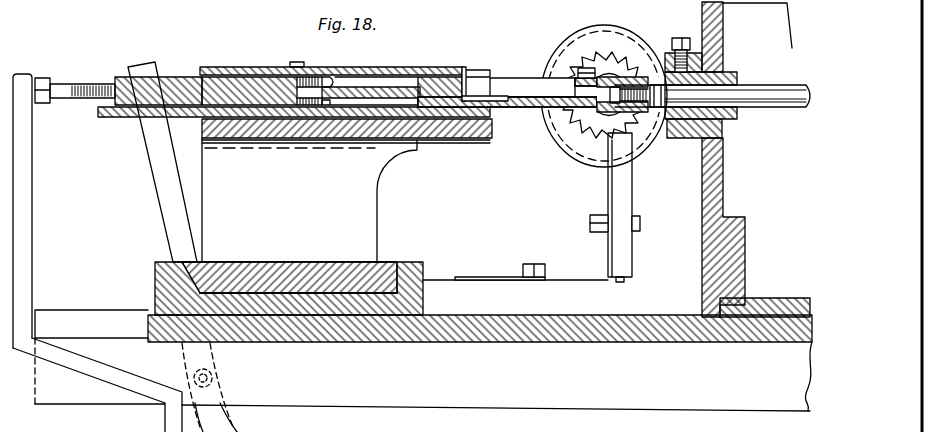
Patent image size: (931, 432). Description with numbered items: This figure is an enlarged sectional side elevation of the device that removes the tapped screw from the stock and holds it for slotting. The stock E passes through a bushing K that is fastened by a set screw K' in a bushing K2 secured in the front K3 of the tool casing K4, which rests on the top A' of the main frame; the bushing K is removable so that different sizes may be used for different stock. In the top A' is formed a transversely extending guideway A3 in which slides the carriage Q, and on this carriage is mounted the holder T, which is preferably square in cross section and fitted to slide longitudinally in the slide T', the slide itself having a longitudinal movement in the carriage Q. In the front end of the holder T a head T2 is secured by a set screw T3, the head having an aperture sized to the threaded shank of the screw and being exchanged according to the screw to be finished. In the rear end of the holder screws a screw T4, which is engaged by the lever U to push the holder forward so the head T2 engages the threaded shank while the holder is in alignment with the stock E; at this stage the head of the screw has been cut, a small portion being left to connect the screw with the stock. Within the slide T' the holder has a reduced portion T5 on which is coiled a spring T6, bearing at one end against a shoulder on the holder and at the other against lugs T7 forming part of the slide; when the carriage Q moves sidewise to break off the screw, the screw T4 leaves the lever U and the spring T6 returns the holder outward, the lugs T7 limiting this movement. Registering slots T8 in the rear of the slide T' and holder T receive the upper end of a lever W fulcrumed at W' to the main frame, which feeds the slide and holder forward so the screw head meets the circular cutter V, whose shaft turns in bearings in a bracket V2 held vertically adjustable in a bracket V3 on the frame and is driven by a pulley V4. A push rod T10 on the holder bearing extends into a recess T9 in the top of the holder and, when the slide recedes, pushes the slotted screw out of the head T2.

The lever U is at (97, 253).
The lever W is at (161, 162).
The fulcrum W' is at (217, 387).
The screw T4 is at (68, 96).
The registering slots T8 is at (165, 78).
The slide T' is at (294, 82).
The spring T6 is at (312, 72).
The lugs T7 is at (337, 80).
The reduced portion T5 is at (370, 87).
The push rod T10 is at (435, 76).
The holder T is at (484, 72).
The recess T9 is at (514, 90).
The set screw T3 is at (585, 67).
The head T2 is at (616, 78).
The pulley V4 is at (555, 134).
The circular cutter V is at (597, 128).
The bracket V2 is at (626, 206).
The bracket V3 is at (583, 268).
The bushing K is at (709, 84).
The bushing K2 is at (680, 37).
The front of tool casing K3 is at (725, 36).
The set screw K' is at (687, 148).
The tool casing K4 is at (724, 186).
The stock E is at (791, 84).
The carriage Q is at (347, 190).
The guideway A3 is at (415, 256).
The top of main frame A' is at (480, 354).